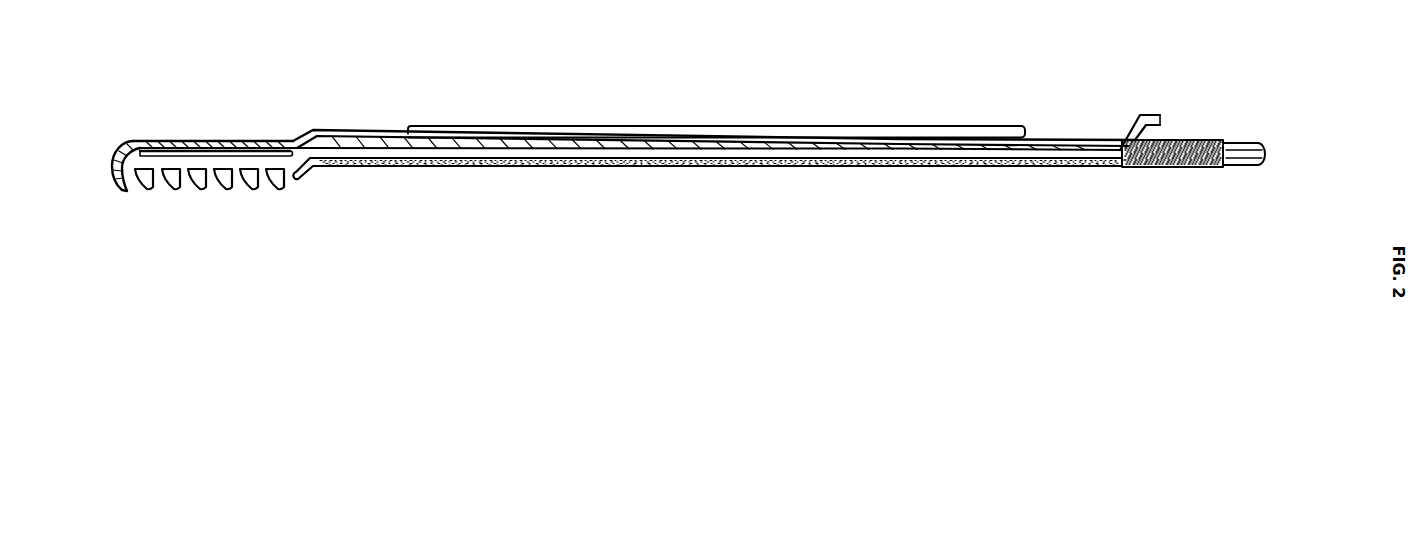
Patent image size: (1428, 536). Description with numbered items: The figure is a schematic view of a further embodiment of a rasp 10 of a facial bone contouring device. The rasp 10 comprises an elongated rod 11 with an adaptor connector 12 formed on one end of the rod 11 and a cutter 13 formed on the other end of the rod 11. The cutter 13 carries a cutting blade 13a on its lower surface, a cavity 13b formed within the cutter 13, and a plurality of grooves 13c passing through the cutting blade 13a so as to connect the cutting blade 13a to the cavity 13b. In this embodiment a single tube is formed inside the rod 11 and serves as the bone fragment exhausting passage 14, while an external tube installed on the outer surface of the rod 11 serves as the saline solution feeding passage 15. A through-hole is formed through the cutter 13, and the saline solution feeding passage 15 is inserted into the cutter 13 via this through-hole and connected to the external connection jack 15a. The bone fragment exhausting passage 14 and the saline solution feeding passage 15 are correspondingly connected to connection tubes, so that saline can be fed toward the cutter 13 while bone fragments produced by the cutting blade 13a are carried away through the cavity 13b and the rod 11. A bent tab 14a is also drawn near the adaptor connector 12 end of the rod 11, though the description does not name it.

The rasp 10 is at (653, 105).
The rod 11 is at (858, 166).
The adaptor connector 12 is at (1243, 142).
The cutter 13 is at (229, 109).
The cutting blade 13a is at (170, 190).
The cavity 13b is at (138, 155).
The grooves 13c is at (262, 188).
The bone fragment exhausting passage 14 is at (508, 153).
The bent tab 14a is at (1140, 114).
The saline solution feeding passage 15 is at (270, 150).
The external connection jack 15a is at (320, 128).